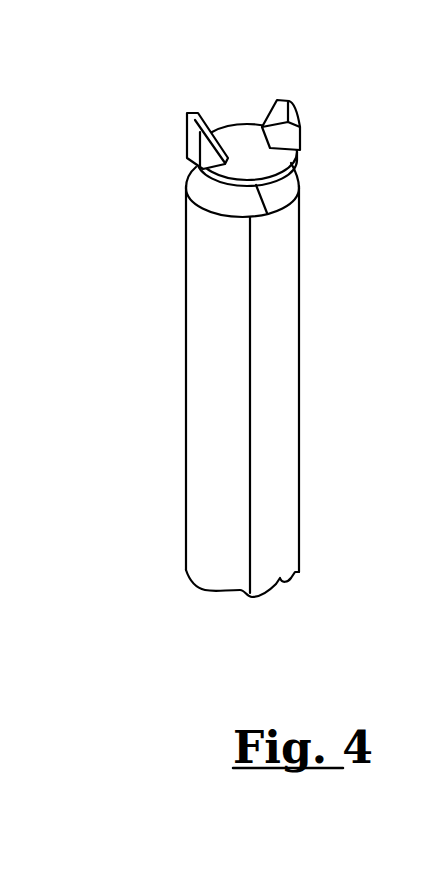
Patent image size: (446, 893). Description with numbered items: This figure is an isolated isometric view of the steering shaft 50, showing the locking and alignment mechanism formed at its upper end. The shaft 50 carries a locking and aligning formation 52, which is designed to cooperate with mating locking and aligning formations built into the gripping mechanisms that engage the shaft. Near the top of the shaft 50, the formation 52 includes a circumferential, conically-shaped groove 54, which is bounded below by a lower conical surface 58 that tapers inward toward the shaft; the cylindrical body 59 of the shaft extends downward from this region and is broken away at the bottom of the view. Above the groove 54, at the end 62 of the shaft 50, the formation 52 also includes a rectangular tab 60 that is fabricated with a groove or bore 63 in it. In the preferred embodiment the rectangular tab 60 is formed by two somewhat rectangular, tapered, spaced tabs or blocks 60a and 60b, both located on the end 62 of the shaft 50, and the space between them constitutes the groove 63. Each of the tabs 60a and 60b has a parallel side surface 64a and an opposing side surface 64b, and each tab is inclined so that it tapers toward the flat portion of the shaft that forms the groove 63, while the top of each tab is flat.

The steering shaft 50 is at (252, 323).
The locking and aligning formation 52 is at (252, 136).
The circumferential conically-shaped groove 54 is at (302, 190).
The lower conical surface 58 is at (187, 183).
The shank body 59 is at (292, 245).
The rectangular tab 60 is at (243, 136).
The first tapered tab 60a is at (229, 168).
The second tapered tab 60b is at (276, 99).
The end of the shaft 62 is at (256, 99).
The groove or bore 63 is at (243, 131).
The parallel side surface 64a is at (190, 162).
The opposing side surface 64b is at (197, 113).